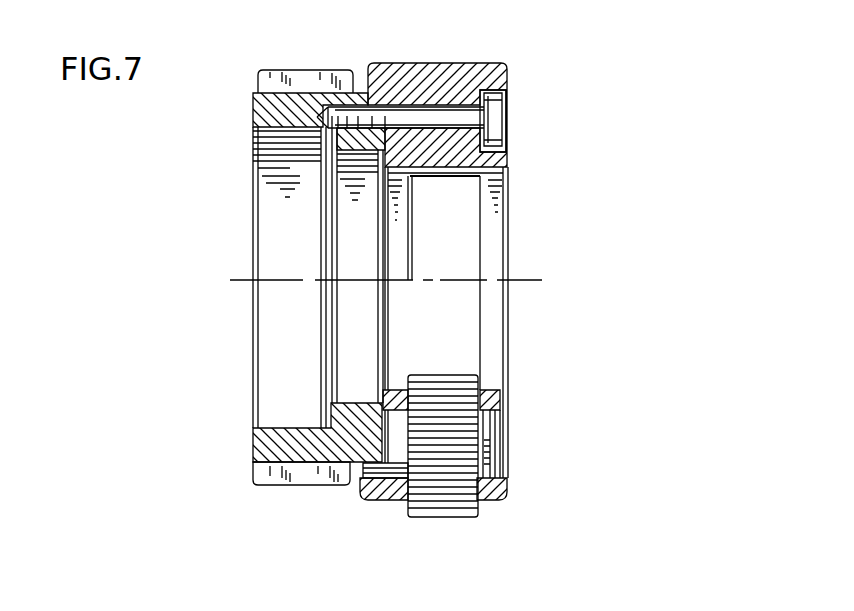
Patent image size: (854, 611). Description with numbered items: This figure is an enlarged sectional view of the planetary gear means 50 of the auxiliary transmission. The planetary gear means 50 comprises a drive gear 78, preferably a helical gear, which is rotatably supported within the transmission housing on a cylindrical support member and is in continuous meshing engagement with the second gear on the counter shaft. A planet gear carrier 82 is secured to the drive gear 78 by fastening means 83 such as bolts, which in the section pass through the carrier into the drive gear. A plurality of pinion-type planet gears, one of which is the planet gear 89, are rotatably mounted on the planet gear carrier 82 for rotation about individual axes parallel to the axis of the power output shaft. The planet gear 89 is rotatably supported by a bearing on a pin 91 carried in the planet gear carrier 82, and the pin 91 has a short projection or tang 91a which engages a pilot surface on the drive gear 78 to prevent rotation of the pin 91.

The planetary gear means 50 is at (242, 222).
The drive gear 78 is at (253, 118).
The planet gear carrier 82 is at (466, 65).
The fastening means 83 is at (495, 124).
The planet gear 89 is at (457, 513).
The pin 91 is at (485, 446).
The tang 91a is at (365, 476).